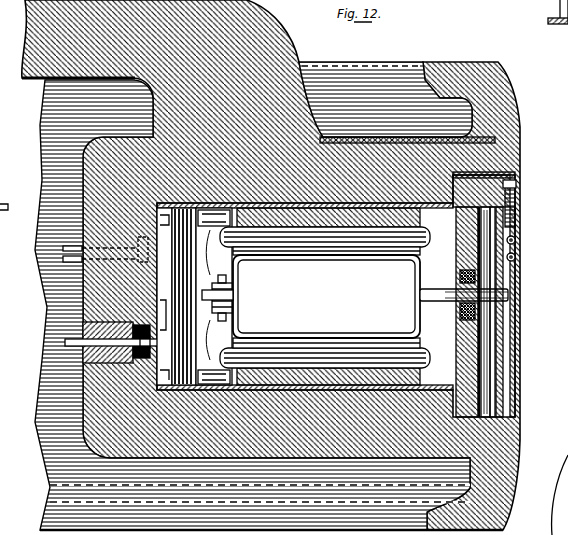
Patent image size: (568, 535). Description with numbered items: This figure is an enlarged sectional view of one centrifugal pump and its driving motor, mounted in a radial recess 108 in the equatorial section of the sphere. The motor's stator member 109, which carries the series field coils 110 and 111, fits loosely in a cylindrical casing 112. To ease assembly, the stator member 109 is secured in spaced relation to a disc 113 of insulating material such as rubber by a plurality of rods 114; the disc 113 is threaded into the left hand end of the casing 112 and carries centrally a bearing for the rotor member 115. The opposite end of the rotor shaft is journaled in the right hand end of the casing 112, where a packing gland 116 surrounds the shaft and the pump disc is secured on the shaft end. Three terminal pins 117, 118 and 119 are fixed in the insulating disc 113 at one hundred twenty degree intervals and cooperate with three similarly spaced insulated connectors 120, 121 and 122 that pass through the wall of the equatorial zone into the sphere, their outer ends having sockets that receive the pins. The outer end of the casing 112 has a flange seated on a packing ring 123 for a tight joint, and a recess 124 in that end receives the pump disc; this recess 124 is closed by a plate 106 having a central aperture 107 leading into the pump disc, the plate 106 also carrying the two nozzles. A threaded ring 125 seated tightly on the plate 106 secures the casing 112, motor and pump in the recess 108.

The plate 106 is at (510, 212).
The central aperture 107 is at (510, 283).
The radial recess 108 is at (515, 133).
The stator member 109 is at (418, 213).
The series field coil 110 is at (424, 224).
The series field coil 111 is at (427, 348).
The cylindrical casing 112 is at (435, 388).
The insulating disc 113 is at (198, 282).
The rods 114 is at (222, 237).
The rotor member 115 is at (326, 296).
The packing gland 116 is at (457, 280).
The terminal pin 117 is at (165, 248).
The terminal pin 118 is at (176, 262).
The terminal pin 119 is at (160, 365).
The insulated connector 120 is at (63, 248).
The insulated connector 121 is at (63, 259).
The insulated connector 122 is at (67, 342).
The packing ring 123 is at (450, 177).
The recess 124 is at (508, 197).
The threaded ring 125 is at (510, 175).